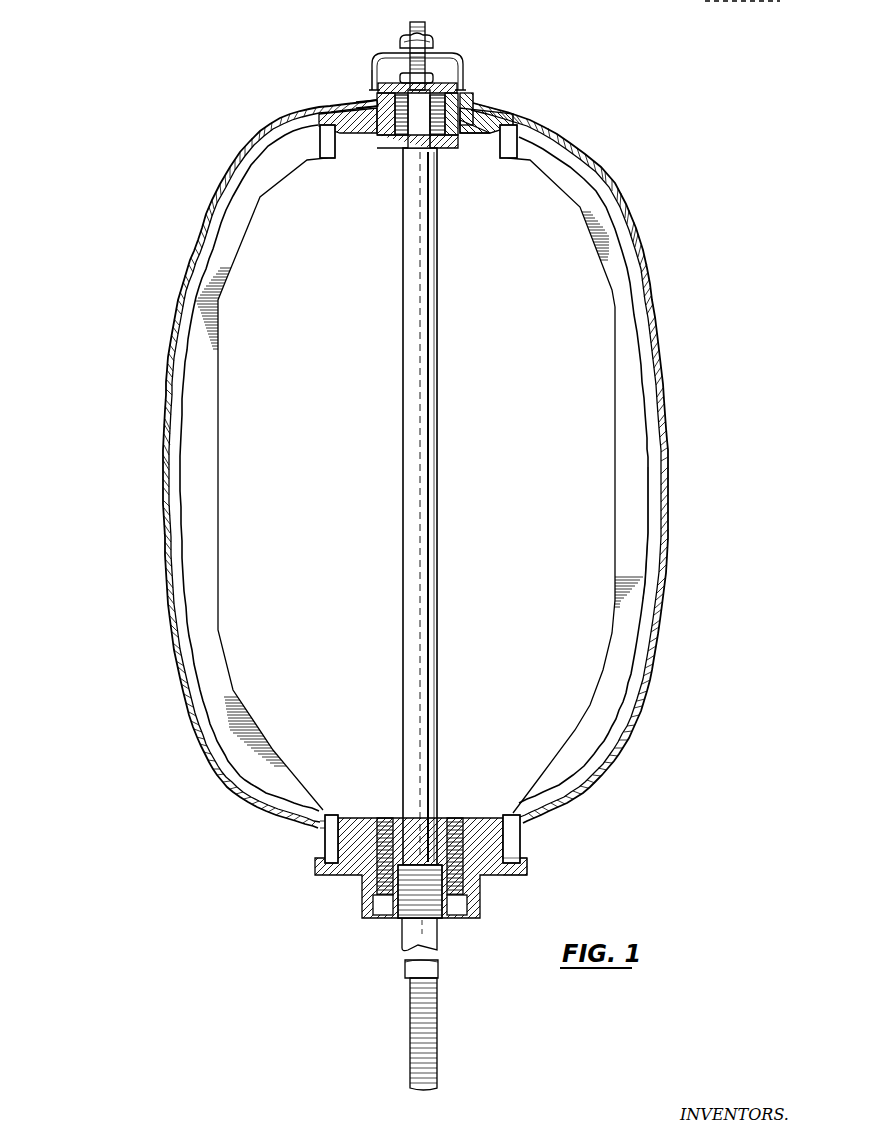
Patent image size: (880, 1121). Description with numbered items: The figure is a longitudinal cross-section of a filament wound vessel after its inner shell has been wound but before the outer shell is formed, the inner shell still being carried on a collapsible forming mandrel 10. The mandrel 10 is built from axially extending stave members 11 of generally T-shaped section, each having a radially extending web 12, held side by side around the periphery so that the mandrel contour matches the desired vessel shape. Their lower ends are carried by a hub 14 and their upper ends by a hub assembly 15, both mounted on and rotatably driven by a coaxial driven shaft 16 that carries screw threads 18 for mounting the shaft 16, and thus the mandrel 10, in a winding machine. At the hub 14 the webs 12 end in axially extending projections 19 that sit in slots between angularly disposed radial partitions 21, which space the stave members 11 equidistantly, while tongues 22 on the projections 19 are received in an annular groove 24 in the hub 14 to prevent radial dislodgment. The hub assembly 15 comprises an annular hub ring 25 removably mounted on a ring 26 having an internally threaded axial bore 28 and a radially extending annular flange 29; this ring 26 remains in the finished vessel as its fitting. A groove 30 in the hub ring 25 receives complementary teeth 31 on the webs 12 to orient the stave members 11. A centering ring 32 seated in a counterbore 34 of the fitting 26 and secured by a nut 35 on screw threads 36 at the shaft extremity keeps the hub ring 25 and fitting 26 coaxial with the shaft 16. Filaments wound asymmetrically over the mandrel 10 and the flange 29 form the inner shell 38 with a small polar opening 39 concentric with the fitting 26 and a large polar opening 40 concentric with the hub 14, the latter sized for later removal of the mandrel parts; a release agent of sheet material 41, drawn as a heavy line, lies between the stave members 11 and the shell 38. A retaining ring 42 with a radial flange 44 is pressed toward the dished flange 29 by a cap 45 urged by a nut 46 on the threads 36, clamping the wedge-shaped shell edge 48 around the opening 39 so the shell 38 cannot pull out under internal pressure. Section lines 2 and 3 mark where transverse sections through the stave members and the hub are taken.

The collapsible forming mandrel 10 is at (330, 885).
The stave members 11 is at (172, 340).
The radially extending web 12 is at (236, 260).
The hub 14 is at (480, 820).
The hub assembly 15 is at (466, 68).
The driven rotary shaft 16 is at (430, 619).
The screw threads 18 is at (434, 1014).
The axially extending projections 19 is at (510, 813).
The radial partitions 21 is at (320, 841).
The axially extending tongues 22 is at (522, 840).
The annular groove 24 is at (512, 872).
The annular hub ring 25 is at (466, 135).
The fitting 26 is at (392, 148).
The internally threaded axial bore 28 is at (440, 148).
The annular flange 29 is at (490, 110).
The groove 30 is at (510, 154).
The teeth 31 is at (326, 154).
The centering ring 32 is at (470, 95).
The counterbore 34 is at (374, 96).
The nut 35 is at (440, 76).
The screw threads 36 is at (427, 28).
The inner shell 38 is at (645, 266).
The small polar opening 39 is at (478, 99).
The large polar opening 40 is at (322, 814).
The sheet material 41 is at (648, 698).
The retaining ring 42 is at (378, 91).
The radial flange 44 is at (352, 97).
The cap 45 is at (375, 70).
The nut 46 is at (404, 43).
The shell edge 48 is at (352, 133).
The section line 2- 2 is at (143, 444).
The section line 3- 3 is at (423, 860).